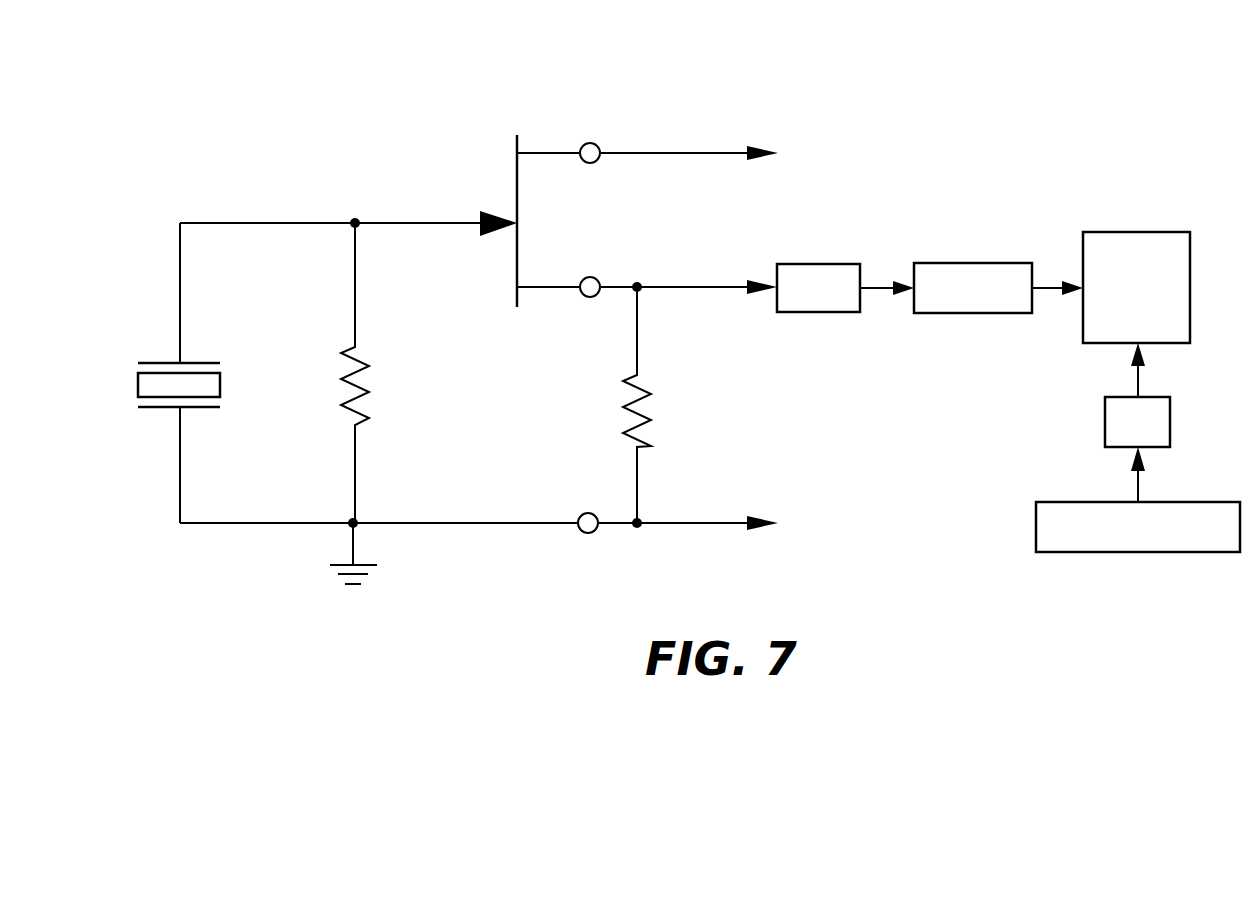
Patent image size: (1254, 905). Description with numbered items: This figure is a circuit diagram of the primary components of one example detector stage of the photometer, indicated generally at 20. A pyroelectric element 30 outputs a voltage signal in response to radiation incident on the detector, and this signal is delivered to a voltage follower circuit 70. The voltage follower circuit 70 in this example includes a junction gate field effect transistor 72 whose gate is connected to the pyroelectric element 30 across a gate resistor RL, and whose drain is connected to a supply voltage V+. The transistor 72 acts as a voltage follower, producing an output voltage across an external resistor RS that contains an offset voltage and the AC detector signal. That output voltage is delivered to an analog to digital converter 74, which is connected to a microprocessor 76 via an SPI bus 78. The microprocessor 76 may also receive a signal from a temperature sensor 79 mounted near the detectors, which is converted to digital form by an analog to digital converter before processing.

The sensor circuit 20 is at (318, 150).
The pyroelectric element 30 is at (220, 384).
The voltage follower circuit 70 is at (637, 103).
The junction gate field effect transistor 72 is at (512, 264).
The analog to digital converter 74 is at (800, 312).
The microprocessor 76 is at (1145, 232).
The SPI bus 78 is at (960, 313).
The temperature sensor 79 is at (1130, 552).